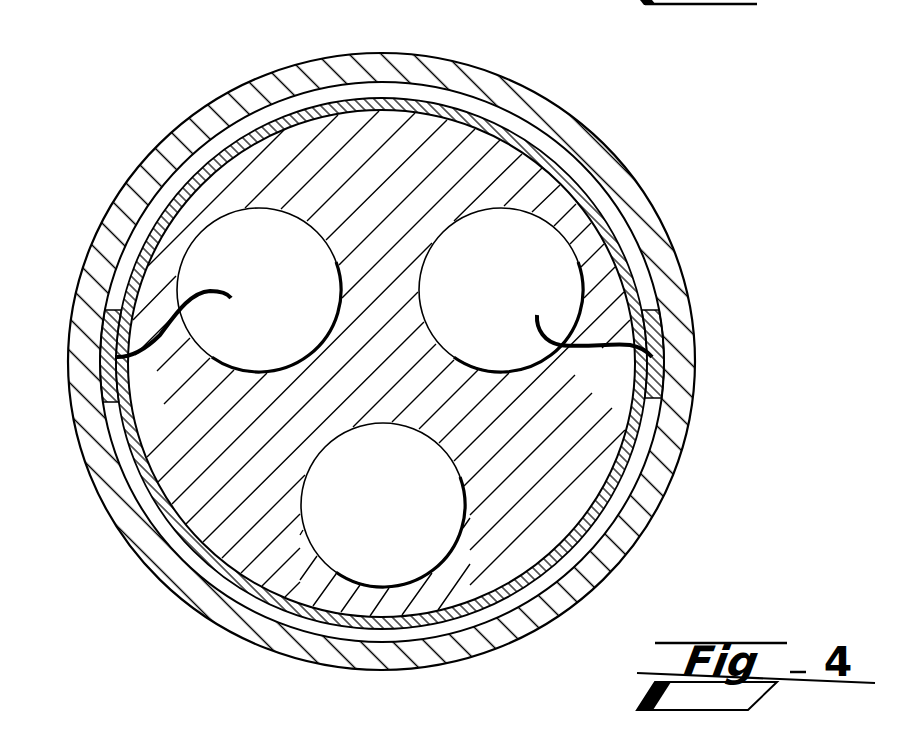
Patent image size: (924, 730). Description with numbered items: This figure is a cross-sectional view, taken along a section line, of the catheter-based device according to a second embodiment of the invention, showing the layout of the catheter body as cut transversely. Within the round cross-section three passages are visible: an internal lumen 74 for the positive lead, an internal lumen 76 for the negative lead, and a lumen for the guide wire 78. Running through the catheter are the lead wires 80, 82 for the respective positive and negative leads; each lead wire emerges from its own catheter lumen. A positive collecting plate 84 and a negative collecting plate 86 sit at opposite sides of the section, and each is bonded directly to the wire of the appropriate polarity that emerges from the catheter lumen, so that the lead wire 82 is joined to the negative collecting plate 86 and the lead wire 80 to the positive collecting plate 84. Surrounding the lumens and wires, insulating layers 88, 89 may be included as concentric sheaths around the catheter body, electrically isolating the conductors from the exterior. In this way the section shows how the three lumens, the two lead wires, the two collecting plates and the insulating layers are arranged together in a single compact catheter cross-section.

The internal lumen for the positive lead 74 is at (538, 252).
The internal lumen for the negative lead 76 is at (217, 240).
The lumen for the guide wire 78 is at (450, 497).
The lead wire 80 is at (568, 352).
The lead wire 82 is at (137, 358).
The positive collecting plate 84 is at (663, 365).
The negative collecting plate 86 is at (107, 338).
The insulating layer 88 is at (538, 90).
The insulating layer 89 is at (310, 97).